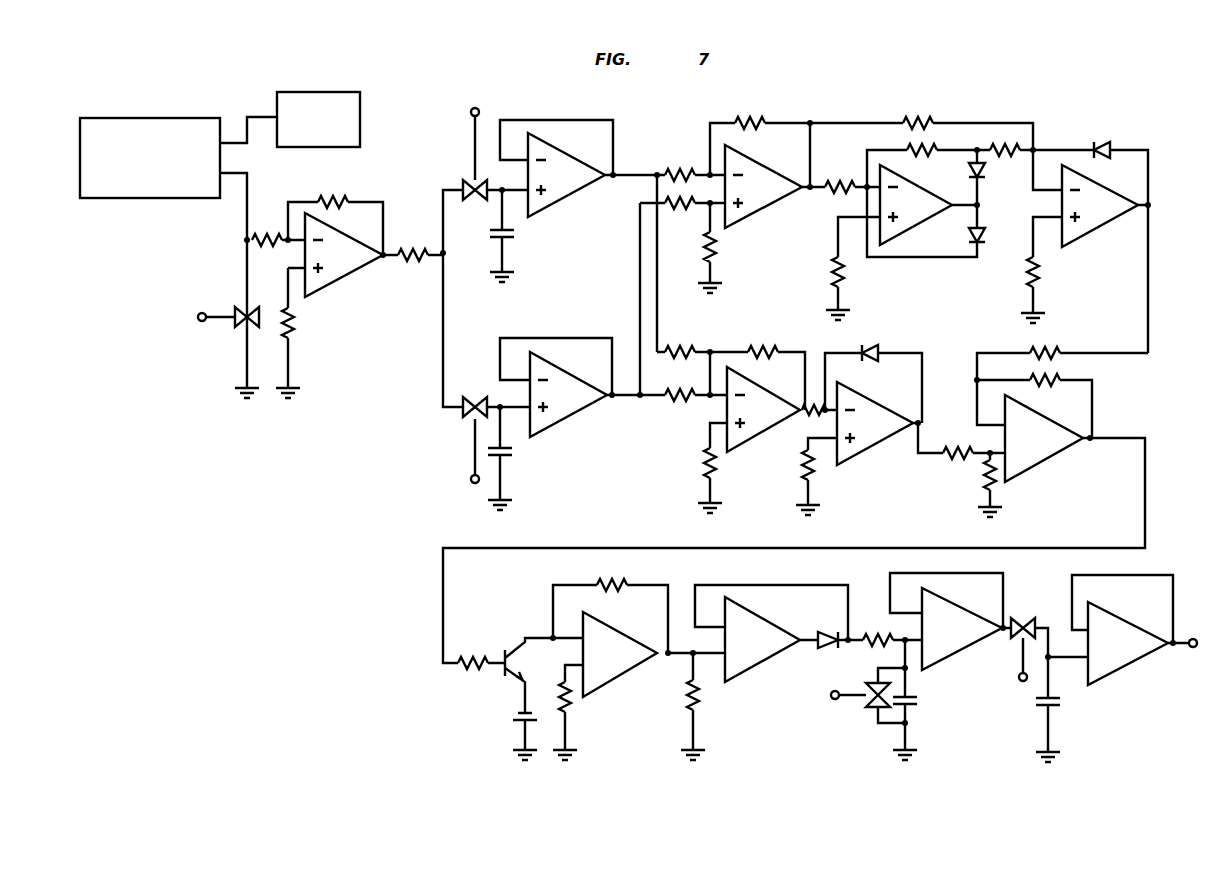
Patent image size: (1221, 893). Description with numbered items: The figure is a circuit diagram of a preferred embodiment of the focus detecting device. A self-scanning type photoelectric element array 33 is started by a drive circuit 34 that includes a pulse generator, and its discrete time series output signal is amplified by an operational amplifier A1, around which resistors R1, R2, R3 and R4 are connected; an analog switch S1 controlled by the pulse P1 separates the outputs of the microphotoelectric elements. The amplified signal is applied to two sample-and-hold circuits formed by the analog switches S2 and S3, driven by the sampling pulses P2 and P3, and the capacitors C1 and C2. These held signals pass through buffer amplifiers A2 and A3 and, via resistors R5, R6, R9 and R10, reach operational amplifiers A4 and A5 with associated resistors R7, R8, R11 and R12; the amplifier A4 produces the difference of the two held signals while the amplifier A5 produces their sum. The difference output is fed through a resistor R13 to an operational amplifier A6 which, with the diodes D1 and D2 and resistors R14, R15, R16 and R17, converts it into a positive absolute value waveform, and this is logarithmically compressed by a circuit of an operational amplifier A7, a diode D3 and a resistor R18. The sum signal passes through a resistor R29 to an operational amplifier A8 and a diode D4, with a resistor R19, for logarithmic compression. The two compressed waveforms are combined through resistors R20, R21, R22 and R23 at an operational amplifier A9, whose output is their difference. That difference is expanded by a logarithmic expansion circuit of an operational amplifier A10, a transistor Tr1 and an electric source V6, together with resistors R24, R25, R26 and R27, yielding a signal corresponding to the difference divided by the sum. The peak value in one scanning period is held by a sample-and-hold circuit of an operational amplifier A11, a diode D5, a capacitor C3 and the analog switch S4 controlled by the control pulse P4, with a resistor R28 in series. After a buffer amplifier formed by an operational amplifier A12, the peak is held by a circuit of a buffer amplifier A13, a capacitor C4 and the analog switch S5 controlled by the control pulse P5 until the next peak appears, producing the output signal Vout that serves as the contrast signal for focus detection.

The self-scanning type photoelectric element array 33 is at (175, 118).
The drive circuit 34 is at (318, 92).
The resistor R1 is at (267, 230).
The resistor R2 is at (333, 192).
The resistor R3 is at (300, 323).
The resistor R4 is at (413, 245).
The resistor R5 is at (680, 165).
The resistor R6 is at (678, 213).
The resistor R7 is at (750, 113).
The resistor R8 is at (697, 247).
The resistor R9 is at (680, 342).
The resistor R10 is at (677, 384).
The resistor R11 is at (765, 342).
The resistor R12 is at (692, 463).
The resistor R13 is at (841, 175).
The resistor R14 is at (822, 272).
The resistor R15 is at (918, 113).
The resistor R16 is at (921, 161).
The resistor R17 is at (1004, 140).
The resistor R18 is at (1019, 272).
The resistor R19 is at (793, 465).
The resistor R20 is at (1046, 343).
The resistor R21 is at (955, 442).
The resistor R22 is at (1047, 391).
The resistor R23 is at (973, 475).
The resistor R24 is at (472, 652).
The resistor R25 is at (582, 700).
The resistor R26 is at (613, 575).
The resistor R27 is at (674, 695).
The resistor R28 is at (877, 630).
The resistor R29 is at (813, 421).
The operational amplifier A1 is at (344, 255).
The buffer amplifier A2 is at (566, 175).
The buffer amplifier A3 is at (568, 394).
The operational amplifier A4 is at (763, 186).
The operational amplifier A5 is at (763, 409).
The operational amplifier A6 is at (916, 205).
The operational amplifier A7 is at (1100, 206).
The operational amplifier A8 is at (875, 423).
The operational amplifier A9 is at (1044, 438).
The operational amplifier A10 is at (620, 654).
The operational amplifier A11 is at (762, 639).
The operational amplifier A12 is at (962, 629).
The buffer amplifier A13 is at (1128, 643).
The capacitor C1 is at (514, 235).
The capacitor C2 is at (512, 453).
The capacitor C3 is at (917, 702).
The capacitor C4 is at (1060, 703).
The diode D1 is at (990, 174).
The diode D2 is at (990, 238).
The diode D3 is at (1104, 136).
The diode D4 is at (874, 340).
The diode D5 is at (824, 627).
The analog switch S1 is at (237, 328).
The analog switch S2 is at (466, 181).
The analog switch S3 is at (461, 415).
The analog switch S4 is at (871, 685).
The analog switch S5 is at (1023, 617).
The pulse P1 is at (189, 317).
The sampling pulse P2 is at (472, 100).
The sampling pulse P3 is at (468, 490).
The control pulse P4 is at (821, 696).
The control pulse P5 is at (1019, 687).
The transistor Tr1 is at (527, 664).
The electric source V6 is at (514, 715).
The output signal Vout is at (1194, 656).